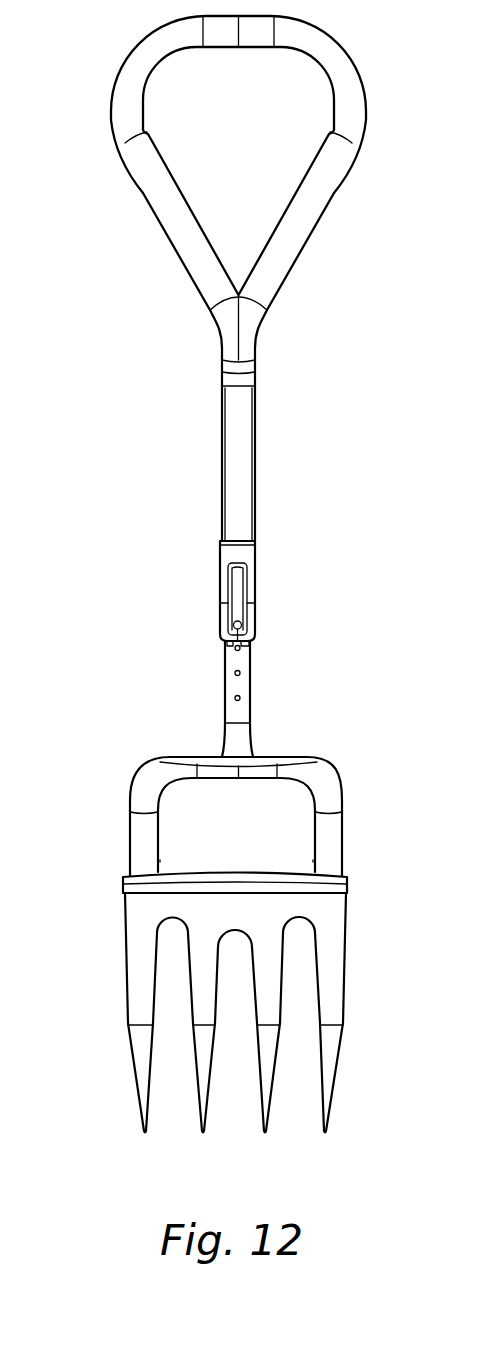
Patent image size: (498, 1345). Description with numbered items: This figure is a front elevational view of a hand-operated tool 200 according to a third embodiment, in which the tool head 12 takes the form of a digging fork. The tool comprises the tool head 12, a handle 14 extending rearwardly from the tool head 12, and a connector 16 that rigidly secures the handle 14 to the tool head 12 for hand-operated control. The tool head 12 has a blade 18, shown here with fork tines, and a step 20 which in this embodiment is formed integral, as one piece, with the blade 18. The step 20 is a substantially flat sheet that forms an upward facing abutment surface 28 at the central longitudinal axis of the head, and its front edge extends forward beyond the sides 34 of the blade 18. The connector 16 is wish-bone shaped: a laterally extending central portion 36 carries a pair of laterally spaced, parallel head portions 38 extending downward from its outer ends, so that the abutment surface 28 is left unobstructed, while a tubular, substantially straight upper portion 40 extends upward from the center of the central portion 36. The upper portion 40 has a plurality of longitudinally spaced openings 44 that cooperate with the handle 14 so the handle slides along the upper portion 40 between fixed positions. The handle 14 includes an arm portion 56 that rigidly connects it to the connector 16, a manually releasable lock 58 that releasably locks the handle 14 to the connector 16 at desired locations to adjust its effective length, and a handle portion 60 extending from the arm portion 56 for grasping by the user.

The hand-operated tool 200 is at (352, 428).
The handle portion 60 is at (327, 203).
The handle 14 is at (229, 552).
The arm portion 56 is at (255, 492).
The manually releasable lock 58 is at (256, 573).
The upper portion 40 is at (279, 689).
The openings 44 is at (243, 672).
The connector 16 is at (344, 797).
The central portion 36 is at (235, 801).
The head portions 38 is at (130, 842).
The abutment surface 28 is at (272, 868).
The step 20 is at (197, 866).
The tool head 12 is at (235, 1013).
The sides 34 is at (124, 938).
The blade 18 is at (341, 1053).